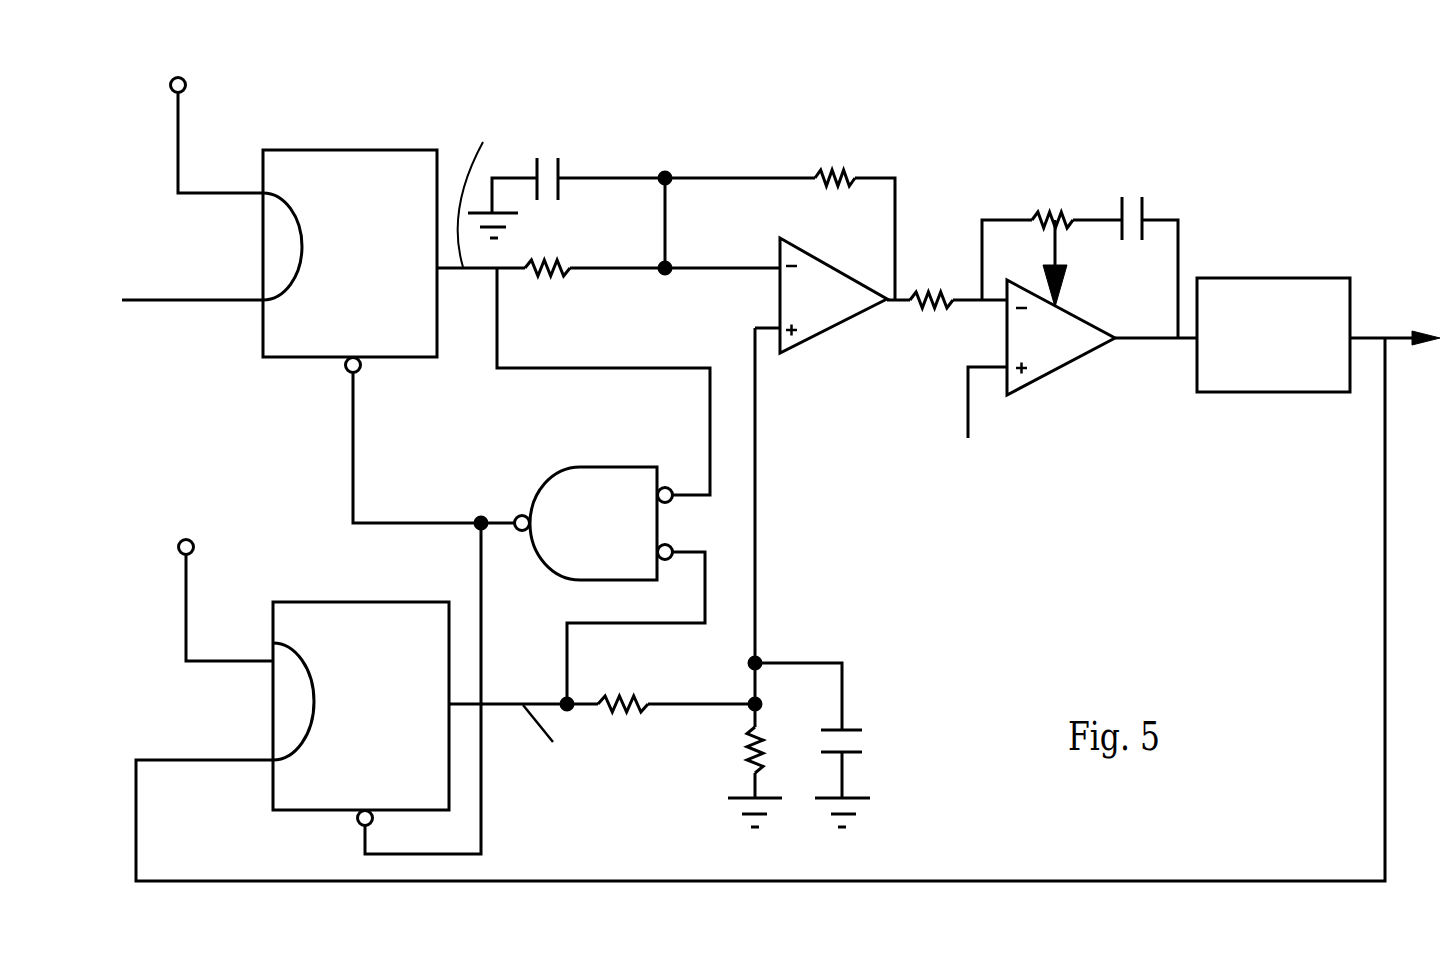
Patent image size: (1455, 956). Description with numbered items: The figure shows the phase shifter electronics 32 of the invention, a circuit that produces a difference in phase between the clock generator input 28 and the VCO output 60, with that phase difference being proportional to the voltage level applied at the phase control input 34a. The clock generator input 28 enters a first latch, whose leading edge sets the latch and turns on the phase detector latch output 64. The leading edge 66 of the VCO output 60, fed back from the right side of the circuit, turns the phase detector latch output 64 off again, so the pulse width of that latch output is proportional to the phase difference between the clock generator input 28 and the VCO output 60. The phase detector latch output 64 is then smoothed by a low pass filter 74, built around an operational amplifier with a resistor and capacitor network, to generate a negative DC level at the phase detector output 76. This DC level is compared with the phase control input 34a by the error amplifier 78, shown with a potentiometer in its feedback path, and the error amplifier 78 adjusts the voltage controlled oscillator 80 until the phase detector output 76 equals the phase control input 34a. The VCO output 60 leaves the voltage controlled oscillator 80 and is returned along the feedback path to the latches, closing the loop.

The clock generator input 28 is at (210, 302).
The phase shifter electronics 32 is at (955, 604).
The phase control input 34a is at (969, 408).
The VCO output 60 is at (1395, 362).
The phase detector latch output#1 64 is at (478, 272).
The leading edge of the VCO output 66 is at (1385, 503).
The low pass filter 74 is at (834, 374).
The phase detector output 76 is at (888, 300).
The error amplifier 78 is at (1055, 193).
The voltage controlled oscillator 80 is at (1277, 382).